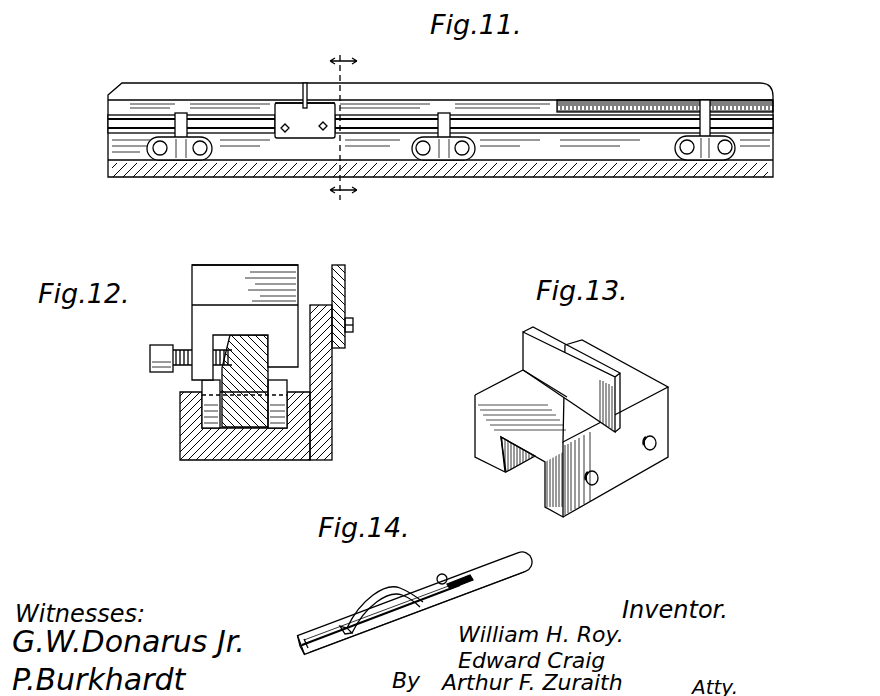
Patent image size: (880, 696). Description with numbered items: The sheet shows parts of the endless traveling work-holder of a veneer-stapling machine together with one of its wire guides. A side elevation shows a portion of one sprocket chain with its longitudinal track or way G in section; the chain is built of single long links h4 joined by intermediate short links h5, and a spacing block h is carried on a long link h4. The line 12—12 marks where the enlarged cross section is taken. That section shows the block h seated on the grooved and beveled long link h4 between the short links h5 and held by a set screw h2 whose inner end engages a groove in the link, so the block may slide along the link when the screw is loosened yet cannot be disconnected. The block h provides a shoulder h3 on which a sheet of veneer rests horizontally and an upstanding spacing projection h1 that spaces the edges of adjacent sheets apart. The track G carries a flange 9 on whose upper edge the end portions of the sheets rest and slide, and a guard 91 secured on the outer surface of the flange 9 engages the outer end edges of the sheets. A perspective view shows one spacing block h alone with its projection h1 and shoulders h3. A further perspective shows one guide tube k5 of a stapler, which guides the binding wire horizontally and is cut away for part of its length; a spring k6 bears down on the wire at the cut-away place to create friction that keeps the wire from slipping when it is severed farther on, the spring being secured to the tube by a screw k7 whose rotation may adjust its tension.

In FIG. 11, the spacing block h is at (336, 126).
In FIG. 12, the spacing block h is at (208, 325).
In FIG. 13, the spacing block h is at (488, 420).
In FIG. 11, the spacing projection h1 is at (305, 83).
In FIG. 12, the spacing projection h1 is at (250, 275).
In FIG. 13, the spacing projection h1 is at (543, 357).
In FIG. 11, the set screw h2 is at (318, 132).
In FIG. 12, the set screw h2 is at (167, 375).
In FIG. 11, the shoulder h3 is at (356, 76).
In FIG. 12, the shoulder h3 is at (245, 289).
In FIG. 13, the shoulder h3 is at (633, 346).
In FIG. 11, the long link h4 is at (402, 138).
In FIG. 12, the long link h4 is at (252, 427).
In FIG. 11, the short link h5 is at (680, 160).
In FIG. 12, the short link h5 is at (288, 474).
In FIG. 11, the flange 9 is at (707, 100).
In FIG. 12, the flange 9 is at (320, 305).
In FIG. 11, the guard 91 is at (612, 88).
In FIG. 12, the guard 91 is at (345, 282).
In FIG. 11, the longitudinal track or way G is at (730, 177).
In FIG. 12, the longitudinal track or way G is at (307, 425).
In FIG. 11, the section line 12 is at (345, 125).
In FIG. 14, the guide tube k5 is at (375, 632).
In FIG. 14, the spring k6 is at (383, 597).
In FIG. 14, the screw k7 is at (450, 578).